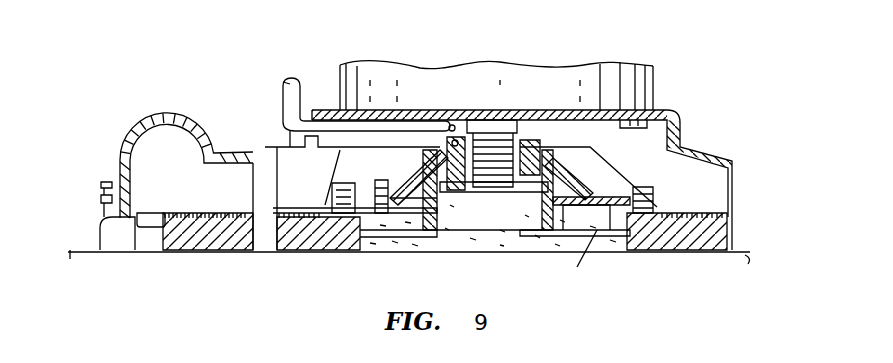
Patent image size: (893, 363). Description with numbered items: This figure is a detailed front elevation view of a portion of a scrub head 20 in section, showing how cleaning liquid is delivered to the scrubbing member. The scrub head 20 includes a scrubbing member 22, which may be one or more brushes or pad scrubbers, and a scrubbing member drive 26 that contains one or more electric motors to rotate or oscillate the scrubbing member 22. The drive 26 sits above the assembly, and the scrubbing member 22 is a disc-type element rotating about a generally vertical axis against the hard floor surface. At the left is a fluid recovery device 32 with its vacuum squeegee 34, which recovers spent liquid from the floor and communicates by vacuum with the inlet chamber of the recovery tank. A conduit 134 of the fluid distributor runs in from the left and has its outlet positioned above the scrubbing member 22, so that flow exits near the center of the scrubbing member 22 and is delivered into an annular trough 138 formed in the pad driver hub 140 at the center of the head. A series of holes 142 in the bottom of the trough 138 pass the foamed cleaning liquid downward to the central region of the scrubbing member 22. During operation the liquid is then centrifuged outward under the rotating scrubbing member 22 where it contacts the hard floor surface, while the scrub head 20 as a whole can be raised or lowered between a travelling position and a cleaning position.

The scrub head 20 is at (740, 83).
The scrubbing member 22 is at (688, 240).
The scrubbing member drive 26 is at (647, 66).
The fluid recovery device 32 is at (117, 117).
The vacuum squeegee 34 is at (123, 153).
The conduit 134 is at (300, 90).
The annular trough 138 is at (528, 140).
The pad driver hub 140 is at (592, 147).
The holes 142 is at (460, 187).